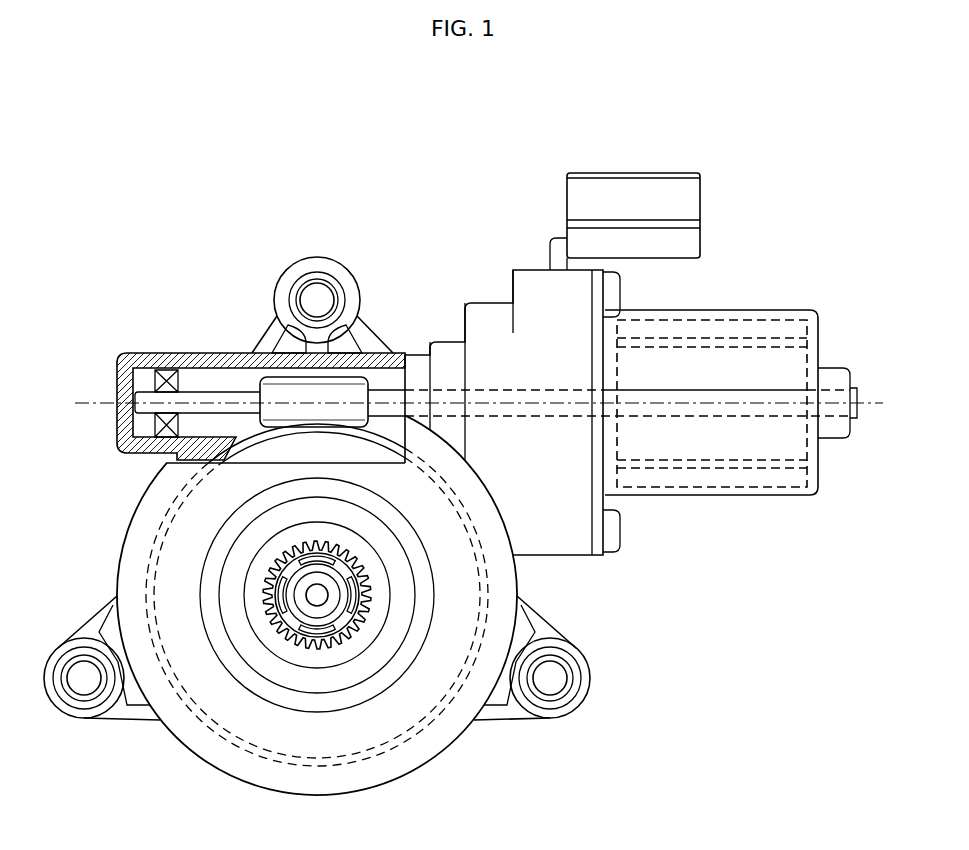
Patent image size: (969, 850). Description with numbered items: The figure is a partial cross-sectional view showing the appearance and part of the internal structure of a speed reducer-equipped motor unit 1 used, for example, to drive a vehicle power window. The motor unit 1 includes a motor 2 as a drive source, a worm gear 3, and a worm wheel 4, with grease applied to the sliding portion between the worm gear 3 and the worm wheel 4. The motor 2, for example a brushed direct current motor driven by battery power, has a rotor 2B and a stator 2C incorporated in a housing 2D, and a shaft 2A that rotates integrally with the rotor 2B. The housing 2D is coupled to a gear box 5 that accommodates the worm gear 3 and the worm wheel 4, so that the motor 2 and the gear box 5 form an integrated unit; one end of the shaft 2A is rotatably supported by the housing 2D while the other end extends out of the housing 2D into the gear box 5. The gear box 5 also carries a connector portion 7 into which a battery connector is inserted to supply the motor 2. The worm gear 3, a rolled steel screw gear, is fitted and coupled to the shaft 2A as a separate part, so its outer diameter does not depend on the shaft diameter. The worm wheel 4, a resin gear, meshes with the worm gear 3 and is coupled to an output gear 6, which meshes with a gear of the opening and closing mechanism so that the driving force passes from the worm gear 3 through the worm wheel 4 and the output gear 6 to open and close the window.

The motor unit 1 is at (126, 309).
The motor 2 is at (736, 409).
The shaft 2A is at (500, 385).
The rotor 2B is at (806, 358).
The stator 2C is at (767, 494).
The housing 2D is at (712, 497).
The worm gear 3 is at (357, 378).
The worm wheel 4 is at (250, 435).
The gear box 5 is at (115, 541).
The output gear 6 is at (330, 643).
The connector portion 7 is at (714, 214).